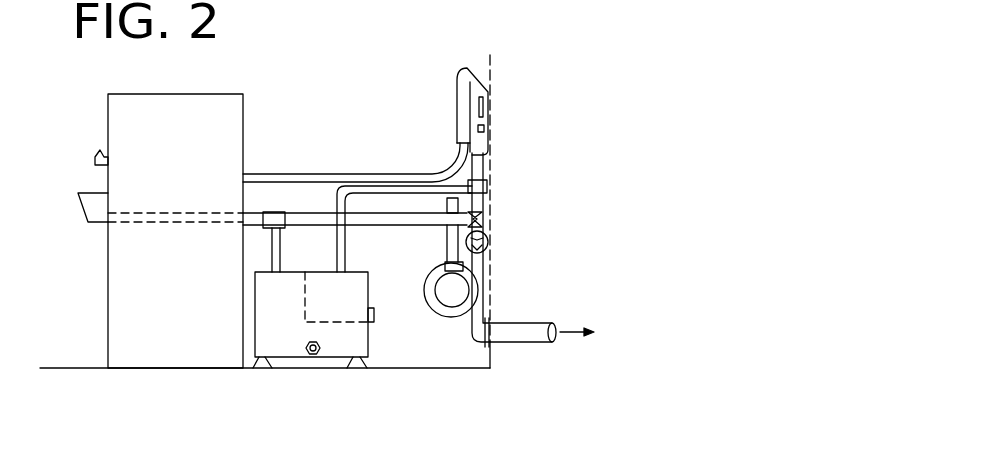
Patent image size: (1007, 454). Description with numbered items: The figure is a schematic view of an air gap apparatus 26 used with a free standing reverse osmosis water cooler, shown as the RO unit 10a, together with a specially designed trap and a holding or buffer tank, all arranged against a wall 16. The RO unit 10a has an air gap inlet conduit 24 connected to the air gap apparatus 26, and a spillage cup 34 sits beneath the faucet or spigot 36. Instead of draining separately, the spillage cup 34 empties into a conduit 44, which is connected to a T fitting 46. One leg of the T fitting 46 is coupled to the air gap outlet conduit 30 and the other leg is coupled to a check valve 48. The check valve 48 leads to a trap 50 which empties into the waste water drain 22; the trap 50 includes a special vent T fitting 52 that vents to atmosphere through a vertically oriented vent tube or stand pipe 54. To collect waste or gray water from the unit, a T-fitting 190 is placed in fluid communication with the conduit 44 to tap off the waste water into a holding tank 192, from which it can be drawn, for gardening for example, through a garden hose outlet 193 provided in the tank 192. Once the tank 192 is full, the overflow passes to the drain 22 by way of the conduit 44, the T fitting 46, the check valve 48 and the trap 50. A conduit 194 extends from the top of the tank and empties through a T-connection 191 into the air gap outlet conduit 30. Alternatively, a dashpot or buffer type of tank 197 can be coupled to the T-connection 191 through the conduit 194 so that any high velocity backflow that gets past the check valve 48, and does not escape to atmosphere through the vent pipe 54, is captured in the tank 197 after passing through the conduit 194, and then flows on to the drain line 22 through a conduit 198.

The RO unit 10a is at (245, 110).
The wall 16 is at (487, 55).
The waste water drain 22 is at (540, 325).
The air gap inlet conduit 24 is at (284, 170).
The air gap apparatus 26 is at (487, 102).
The air gap outlet conduit 30 is at (481, 175).
The spillage cup 34 is at (86, 214).
The faucet or spigot 36 is at (93, 158).
The conduit 44 is at (356, 228).
The T fitting 46 is at (483, 218).
The check valve 48 is at (489, 241).
The trap 50 is at (441, 312).
The vent T fitting 52 is at (452, 265).
The vent tube or stand pipe 54 is at (447, 205).
The T-fitting 190 is at (274, 212).
The T-connection 191 is at (488, 190).
The holding tank 192 is at (255, 322).
The garden hose outlet 193 is at (318, 358).
The conduit 194 is at (374, 188).
The buffer tank 197 is at (337, 297).
The conduit 198 is at (372, 318).